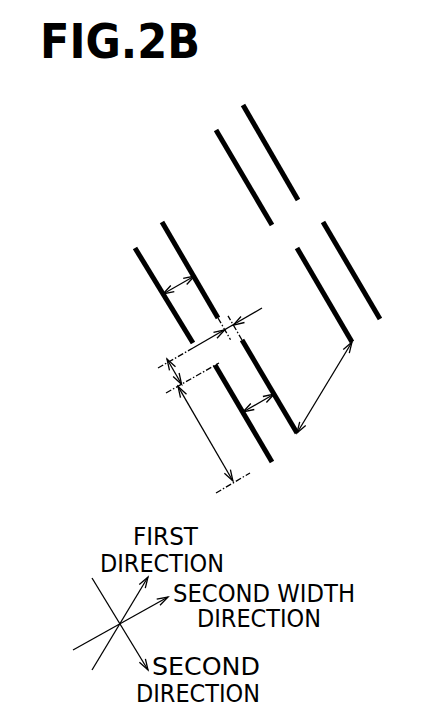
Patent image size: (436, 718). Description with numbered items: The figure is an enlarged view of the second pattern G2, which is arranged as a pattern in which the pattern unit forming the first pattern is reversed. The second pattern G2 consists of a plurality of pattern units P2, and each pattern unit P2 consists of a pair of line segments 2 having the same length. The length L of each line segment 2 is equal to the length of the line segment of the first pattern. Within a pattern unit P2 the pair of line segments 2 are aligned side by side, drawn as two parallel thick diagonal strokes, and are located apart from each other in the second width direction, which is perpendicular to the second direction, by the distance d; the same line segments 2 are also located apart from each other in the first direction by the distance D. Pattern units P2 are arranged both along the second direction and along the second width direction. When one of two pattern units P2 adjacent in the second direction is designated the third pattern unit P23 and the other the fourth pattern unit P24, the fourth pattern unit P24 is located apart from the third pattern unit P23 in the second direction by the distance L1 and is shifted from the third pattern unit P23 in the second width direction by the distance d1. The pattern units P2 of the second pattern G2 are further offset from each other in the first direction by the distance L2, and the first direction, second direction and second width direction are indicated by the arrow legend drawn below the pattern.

The line segment 2 is at (222, 342).
The pattern unit P2 is at (283, 152).
The third pattern unit P23 is at (160, 166).
The fourth pattern unit P24 is at (286, 452).
The second pattern G2 is at (214, 342).
The distance d is at (180, 297).
The distance d1 is at (218, 338).
The distance D is at (256, 388).
The length L is at (214, 439).
The distance L1 is at (180, 377).
The distance L2 is at (325, 387).